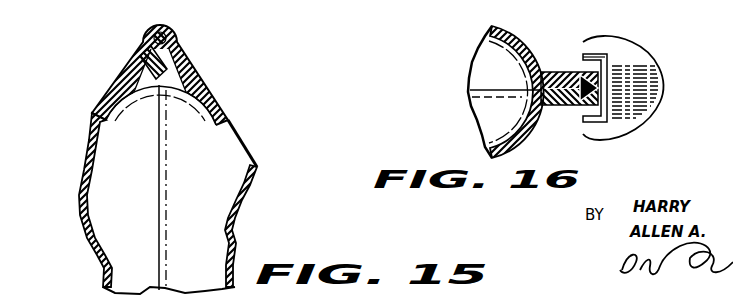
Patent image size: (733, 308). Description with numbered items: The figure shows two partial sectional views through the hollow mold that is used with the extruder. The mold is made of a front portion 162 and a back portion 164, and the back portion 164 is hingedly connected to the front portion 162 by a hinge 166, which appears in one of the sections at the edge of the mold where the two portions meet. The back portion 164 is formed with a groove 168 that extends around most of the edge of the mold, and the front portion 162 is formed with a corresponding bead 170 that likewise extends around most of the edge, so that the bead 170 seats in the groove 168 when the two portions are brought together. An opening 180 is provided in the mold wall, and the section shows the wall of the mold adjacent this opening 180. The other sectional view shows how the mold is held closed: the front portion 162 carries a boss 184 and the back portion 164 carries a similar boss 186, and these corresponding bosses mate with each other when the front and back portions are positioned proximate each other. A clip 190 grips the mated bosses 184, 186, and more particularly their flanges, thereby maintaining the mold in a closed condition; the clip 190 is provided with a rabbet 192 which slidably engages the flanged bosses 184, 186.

In FIG. 15, the front portion 162 is at (103, 101).
In FIG. 16, the front portion 162 is at (477, 48).
In FIG. 15, the back portion 164 is at (215, 93).
In FIG. 16, the back portion 164 is at (493, 119).
In FIG. 15, the hinge 166 is at (146, 41).
In FIG. 16, the groove 168 is at (540, 108).
In FIG. 16, the bead 170 is at (548, 70).
In FIG. 15, the opening 180 is at (240, 137).
In FIG. 16, the boss 184 is at (572, 70).
In FIG. 16, the boss 186 is at (575, 108).
In FIG. 16, the clip 190 is at (632, 71).
In FIG. 16, the rabbet 192 is at (598, 58).